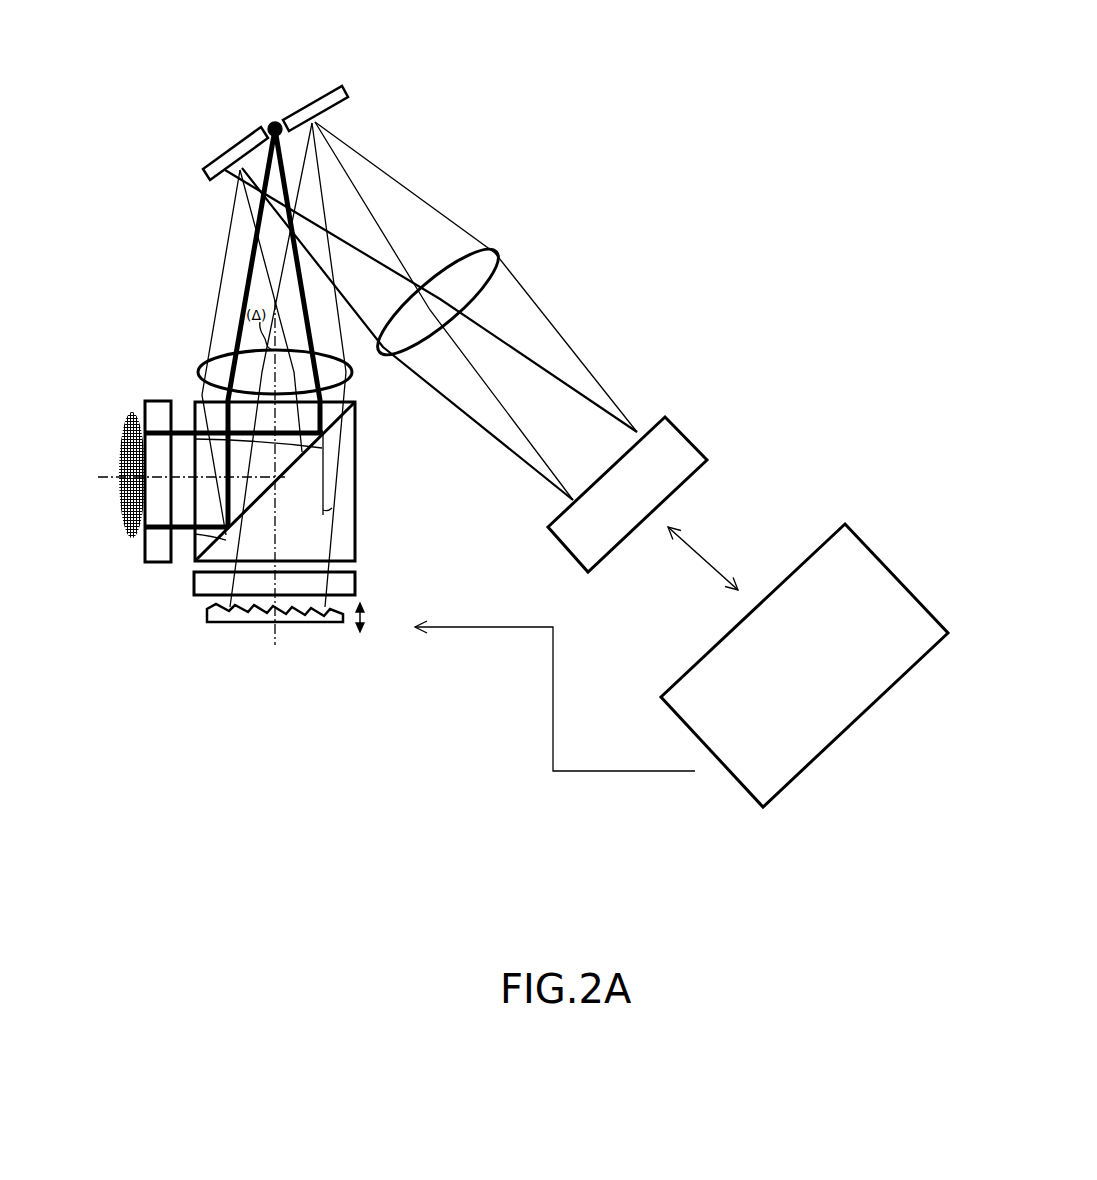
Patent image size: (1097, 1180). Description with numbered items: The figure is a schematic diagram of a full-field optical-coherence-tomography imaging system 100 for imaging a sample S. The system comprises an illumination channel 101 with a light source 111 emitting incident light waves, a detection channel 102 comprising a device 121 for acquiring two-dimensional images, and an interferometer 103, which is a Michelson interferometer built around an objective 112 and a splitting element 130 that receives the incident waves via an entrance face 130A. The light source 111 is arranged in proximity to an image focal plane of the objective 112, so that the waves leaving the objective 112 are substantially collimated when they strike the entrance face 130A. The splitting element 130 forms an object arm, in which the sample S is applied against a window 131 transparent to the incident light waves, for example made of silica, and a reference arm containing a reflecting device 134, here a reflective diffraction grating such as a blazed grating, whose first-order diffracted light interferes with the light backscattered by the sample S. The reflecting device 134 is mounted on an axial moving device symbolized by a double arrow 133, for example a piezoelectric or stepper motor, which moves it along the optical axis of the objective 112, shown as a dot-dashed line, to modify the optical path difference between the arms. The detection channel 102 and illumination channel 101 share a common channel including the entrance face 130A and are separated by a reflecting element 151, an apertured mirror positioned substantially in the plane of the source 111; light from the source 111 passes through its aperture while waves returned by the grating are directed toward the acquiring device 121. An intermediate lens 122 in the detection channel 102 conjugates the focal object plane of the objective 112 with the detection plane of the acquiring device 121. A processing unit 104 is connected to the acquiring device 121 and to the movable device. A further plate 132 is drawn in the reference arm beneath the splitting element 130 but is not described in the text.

The optical-coherence-tomography imaging system 100 is at (797, 95).
The illumination channel 101 is at (180, 258).
The detection channel 102 is at (583, 258).
The interferometer 103 is at (166, 580).
The processing unit 104 is at (888, 568).
The light source 111 is at (268, 125).
The objective 112 is at (203, 372).
The device for acquiring two-dimensional images 121 is at (683, 425).
The intermediate lens 122 is at (470, 275).
The splitting element 130 is at (355, 498).
The entrance face 130A is at (340, 392).
The window 131 is at (157, 402).
The reference plate 132 is at (362, 585).
The axial moving device 133 is at (366, 627).
The reflecting device 134 is at (262, 625).
The reflecting element 151 is at (330, 88).
The sample S is at (122, 500).